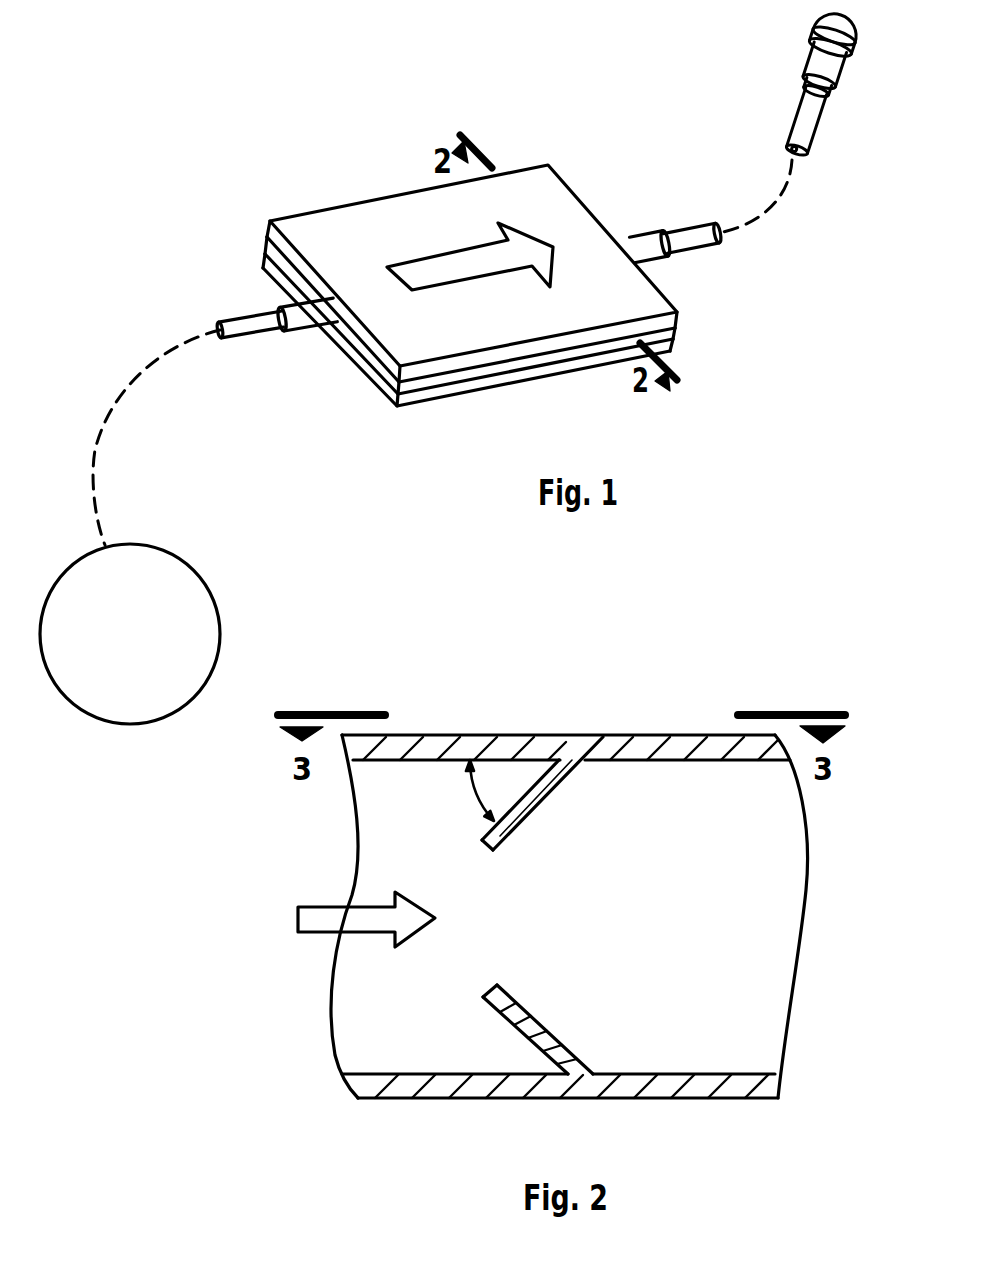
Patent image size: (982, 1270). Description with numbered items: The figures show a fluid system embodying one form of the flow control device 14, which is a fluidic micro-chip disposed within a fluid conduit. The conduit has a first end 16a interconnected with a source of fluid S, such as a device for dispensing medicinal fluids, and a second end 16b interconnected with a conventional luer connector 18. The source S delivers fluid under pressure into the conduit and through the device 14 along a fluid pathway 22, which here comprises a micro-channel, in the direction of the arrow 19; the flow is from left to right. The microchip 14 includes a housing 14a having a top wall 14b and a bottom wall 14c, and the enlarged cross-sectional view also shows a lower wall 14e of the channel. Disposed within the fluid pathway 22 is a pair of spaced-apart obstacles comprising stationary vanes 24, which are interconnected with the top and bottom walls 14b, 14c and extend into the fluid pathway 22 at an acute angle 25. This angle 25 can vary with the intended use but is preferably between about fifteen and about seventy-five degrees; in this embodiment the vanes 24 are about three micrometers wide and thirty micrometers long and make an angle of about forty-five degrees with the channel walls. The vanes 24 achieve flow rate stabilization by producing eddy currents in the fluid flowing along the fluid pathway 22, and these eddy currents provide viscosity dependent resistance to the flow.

In FIG. 1, the flow control device 14 is at (468, 283).
In FIG. 2, the flow control device 14 is at (569, 910).
In FIG. 1, the housing 14a is at (528, 175).
In FIG. 1, the top wall 14b is at (513, 320).
In FIG. 2, the top wall 14b is at (618, 735).
In FIG. 1, the bottom wall 14c is at (463, 388).
In FIG. 2, the lower wall 14e is at (723, 1100).
In FIG. 1, the first end 16a is at (108, 543).
In FIG. 1, the second end 16b is at (827, 97).
In FIG. 1, the luer connector 18 is at (807, 60).
In FIG. 1, the arrow 19 is at (487, 255).
In FIG. 2, the arrow 19 is at (323, 900).
In FIG. 2, the fluid pathway 22 is at (663, 931).
In FIG. 2, the stationary vanes 24 is at (543, 803).
In FIG. 2, the acute angle 25 is at (476, 793).
In FIG. 1, the source of fluid S is at (212, 595).